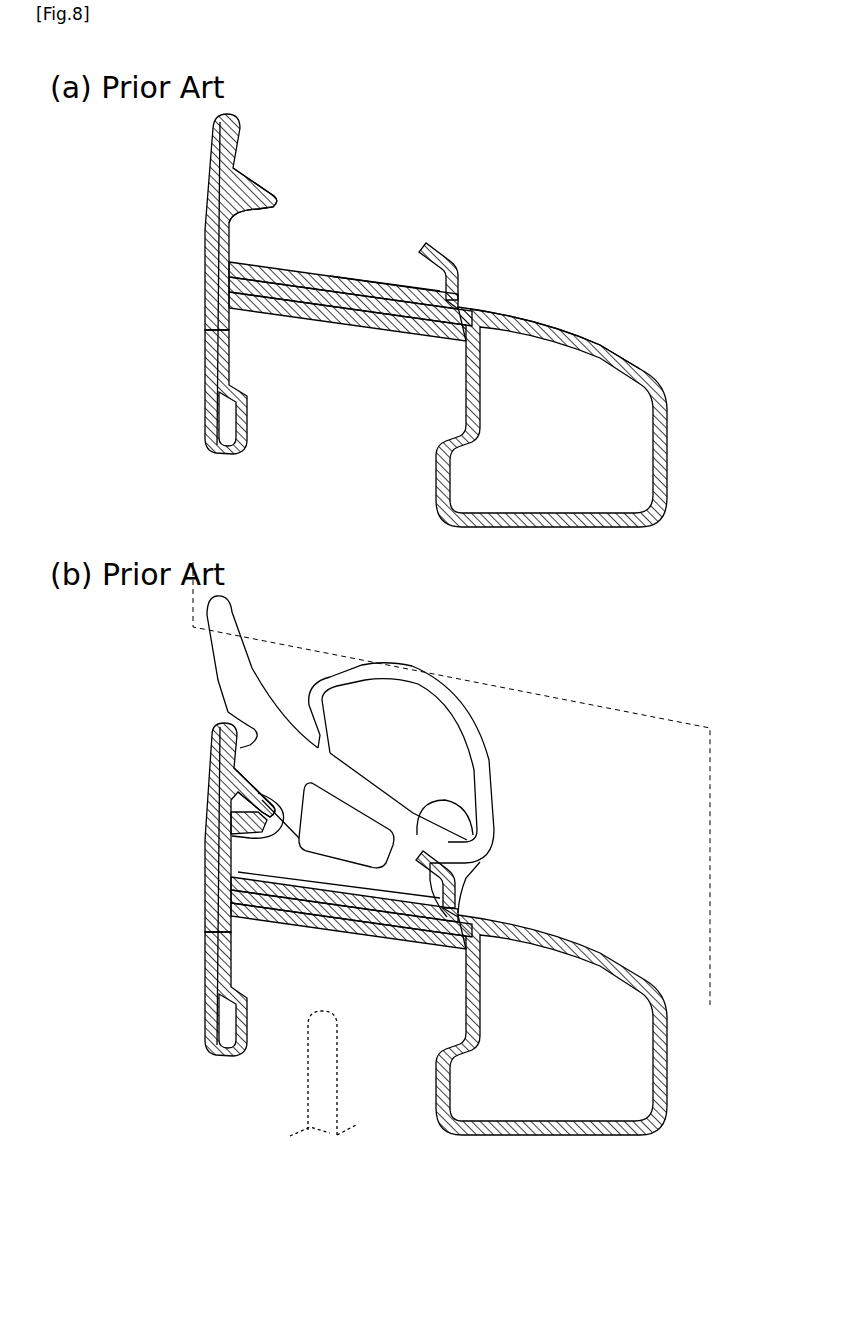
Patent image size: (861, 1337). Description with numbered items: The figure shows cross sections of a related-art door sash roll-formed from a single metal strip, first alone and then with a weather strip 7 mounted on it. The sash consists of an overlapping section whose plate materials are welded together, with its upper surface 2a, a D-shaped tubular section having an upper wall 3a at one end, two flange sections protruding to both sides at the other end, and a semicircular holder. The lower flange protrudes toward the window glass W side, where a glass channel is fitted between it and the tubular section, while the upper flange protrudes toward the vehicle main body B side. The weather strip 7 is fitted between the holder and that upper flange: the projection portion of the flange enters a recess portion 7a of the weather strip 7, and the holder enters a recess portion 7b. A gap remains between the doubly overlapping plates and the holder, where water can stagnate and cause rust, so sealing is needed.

The upper surface of plate portion 2a is at (380, 283).
The upper wall of tubular seal portion 3a is at (552, 325).
The weather strip 7 is at (349, 756).
The recess portion 7a is at (229, 818).
The recess portion 7b is at (418, 822).
The vehicle main body B is at (643, 716).
The window glass W is at (327, 1080).